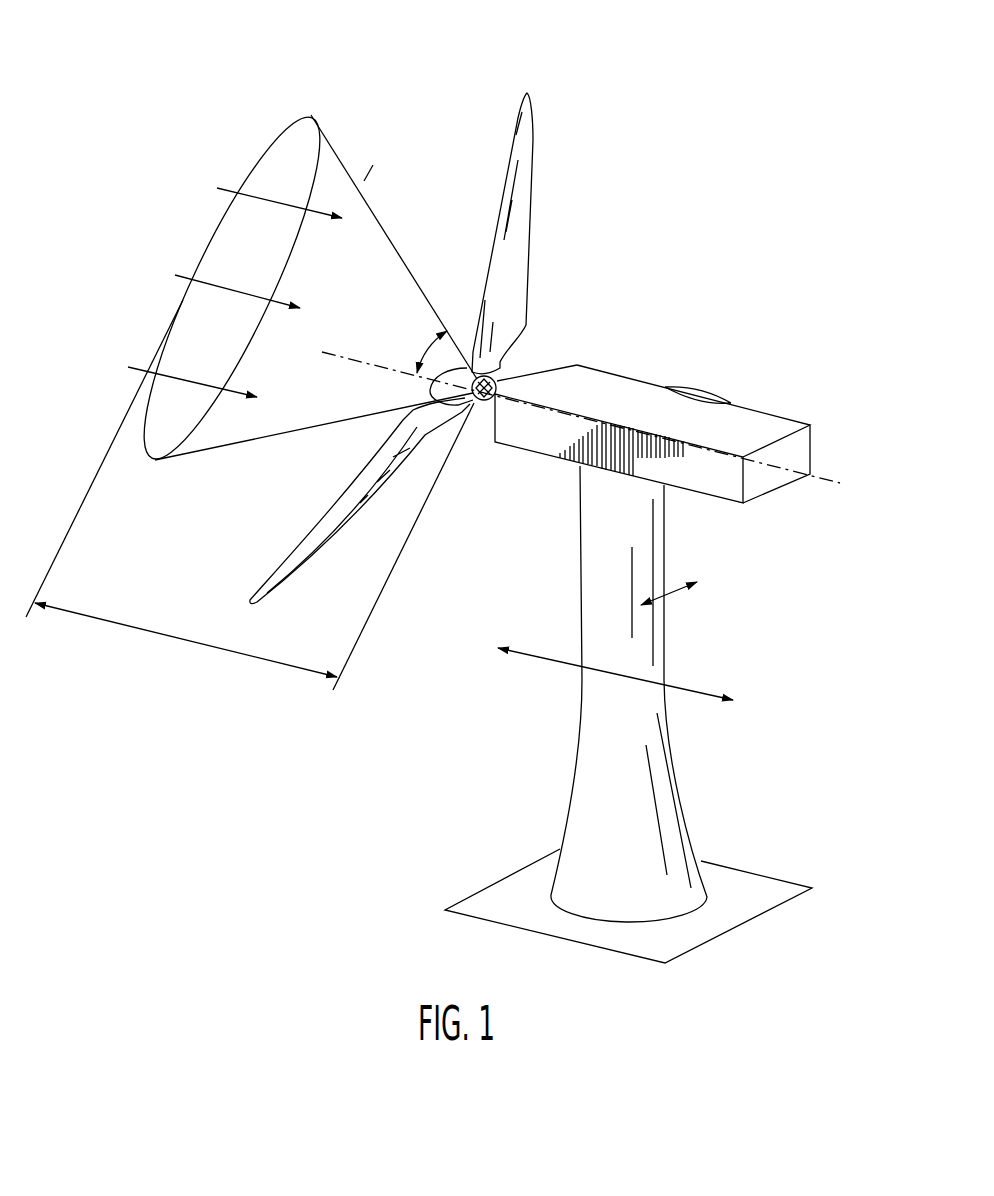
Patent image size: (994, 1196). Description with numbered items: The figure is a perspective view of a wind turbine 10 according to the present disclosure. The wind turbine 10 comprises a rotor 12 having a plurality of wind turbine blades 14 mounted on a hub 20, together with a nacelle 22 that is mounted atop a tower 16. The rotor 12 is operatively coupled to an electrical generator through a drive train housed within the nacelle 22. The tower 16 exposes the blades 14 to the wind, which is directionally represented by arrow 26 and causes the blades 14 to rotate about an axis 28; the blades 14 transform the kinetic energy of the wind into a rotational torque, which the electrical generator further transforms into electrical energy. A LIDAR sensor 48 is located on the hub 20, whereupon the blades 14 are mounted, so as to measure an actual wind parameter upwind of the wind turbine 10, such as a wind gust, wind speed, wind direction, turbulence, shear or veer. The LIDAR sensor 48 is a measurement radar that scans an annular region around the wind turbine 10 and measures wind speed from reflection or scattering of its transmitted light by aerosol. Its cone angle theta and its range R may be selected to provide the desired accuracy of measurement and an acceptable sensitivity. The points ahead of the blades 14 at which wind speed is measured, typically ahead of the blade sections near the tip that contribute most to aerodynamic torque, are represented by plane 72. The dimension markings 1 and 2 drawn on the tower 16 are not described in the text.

The wind turbine 10 is at (226, 72).
The rotor 12 is at (553, 358).
The wind turbine blades 14 is at (527, 255).
The tower 16 is at (672, 780).
The hub 20 is at (468, 420).
The nacelle 22 is at (813, 441).
The arrow representing wind direction 26 is at (184, 275).
The axis 28 is at (347, 357).
The LIDAR sensor 48 is at (507, 367).
The plane 72 is at (368, 176).
The tower diameter 1 is at (710, 692).
The tower wall thickness 2 is at (697, 586).
The range R is at (250, 495).
The cone angle theta is at (428, 347).